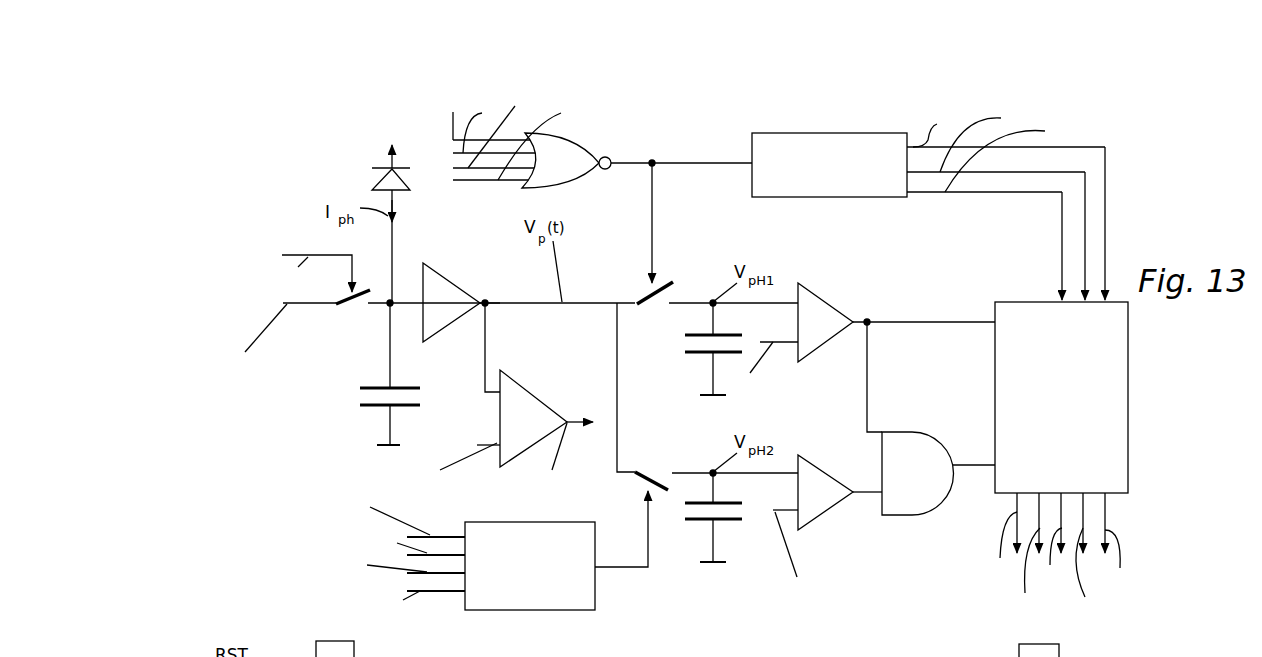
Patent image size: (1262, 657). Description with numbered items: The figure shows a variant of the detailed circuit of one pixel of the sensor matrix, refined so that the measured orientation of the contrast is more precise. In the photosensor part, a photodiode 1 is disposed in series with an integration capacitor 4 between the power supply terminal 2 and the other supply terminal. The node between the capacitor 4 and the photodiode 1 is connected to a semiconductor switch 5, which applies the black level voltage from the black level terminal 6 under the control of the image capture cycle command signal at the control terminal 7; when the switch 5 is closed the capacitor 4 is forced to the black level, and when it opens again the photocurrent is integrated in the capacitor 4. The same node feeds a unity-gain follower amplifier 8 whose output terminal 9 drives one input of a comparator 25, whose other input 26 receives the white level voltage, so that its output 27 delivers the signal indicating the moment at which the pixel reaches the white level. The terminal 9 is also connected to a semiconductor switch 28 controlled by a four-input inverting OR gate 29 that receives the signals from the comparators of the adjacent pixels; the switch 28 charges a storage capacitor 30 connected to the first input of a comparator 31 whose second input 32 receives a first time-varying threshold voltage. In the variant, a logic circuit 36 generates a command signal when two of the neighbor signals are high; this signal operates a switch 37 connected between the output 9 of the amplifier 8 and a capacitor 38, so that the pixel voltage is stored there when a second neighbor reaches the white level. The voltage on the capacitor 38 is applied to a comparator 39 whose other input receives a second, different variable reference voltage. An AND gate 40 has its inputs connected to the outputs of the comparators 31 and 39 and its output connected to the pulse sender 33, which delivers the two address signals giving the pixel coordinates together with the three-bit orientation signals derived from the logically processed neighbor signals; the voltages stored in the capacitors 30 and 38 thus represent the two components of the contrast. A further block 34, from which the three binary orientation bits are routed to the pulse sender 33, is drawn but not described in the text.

The photodiode 1 is at (368, 180).
The power supply terminal 2 is at (389, 157).
The integration capacitor 4 is at (375, 408).
The semiconductor switch 5 is at (358, 312).
The black level terminal 6 is at (312, 304).
The control terminal 7 is at (323, 254).
The follower amplifier 8 is at (434, 292).
The output terminal 9 is at (490, 303).
The comparator 25 is at (525, 420).
The comparator input 26 is at (486, 443).
The comparator output 27 is at (578, 428).
The semiconductor switch 28 is at (668, 262).
The inverting OR gate 29 is at (563, 150).
The storage capacitor 30 is at (705, 358).
The comparator 31 is at (820, 310).
The comparator input 32 is at (778, 343).
The pulse sender 33 is at (1088, 455).
The logic circuit 34 is at (773, 153).
The logic circuit 36 is at (542, 553).
The switch 37 is at (648, 462).
The capacitor 38 is at (723, 525).
The comparator 39 is at (825, 496).
The AND gate 40 is at (898, 498).